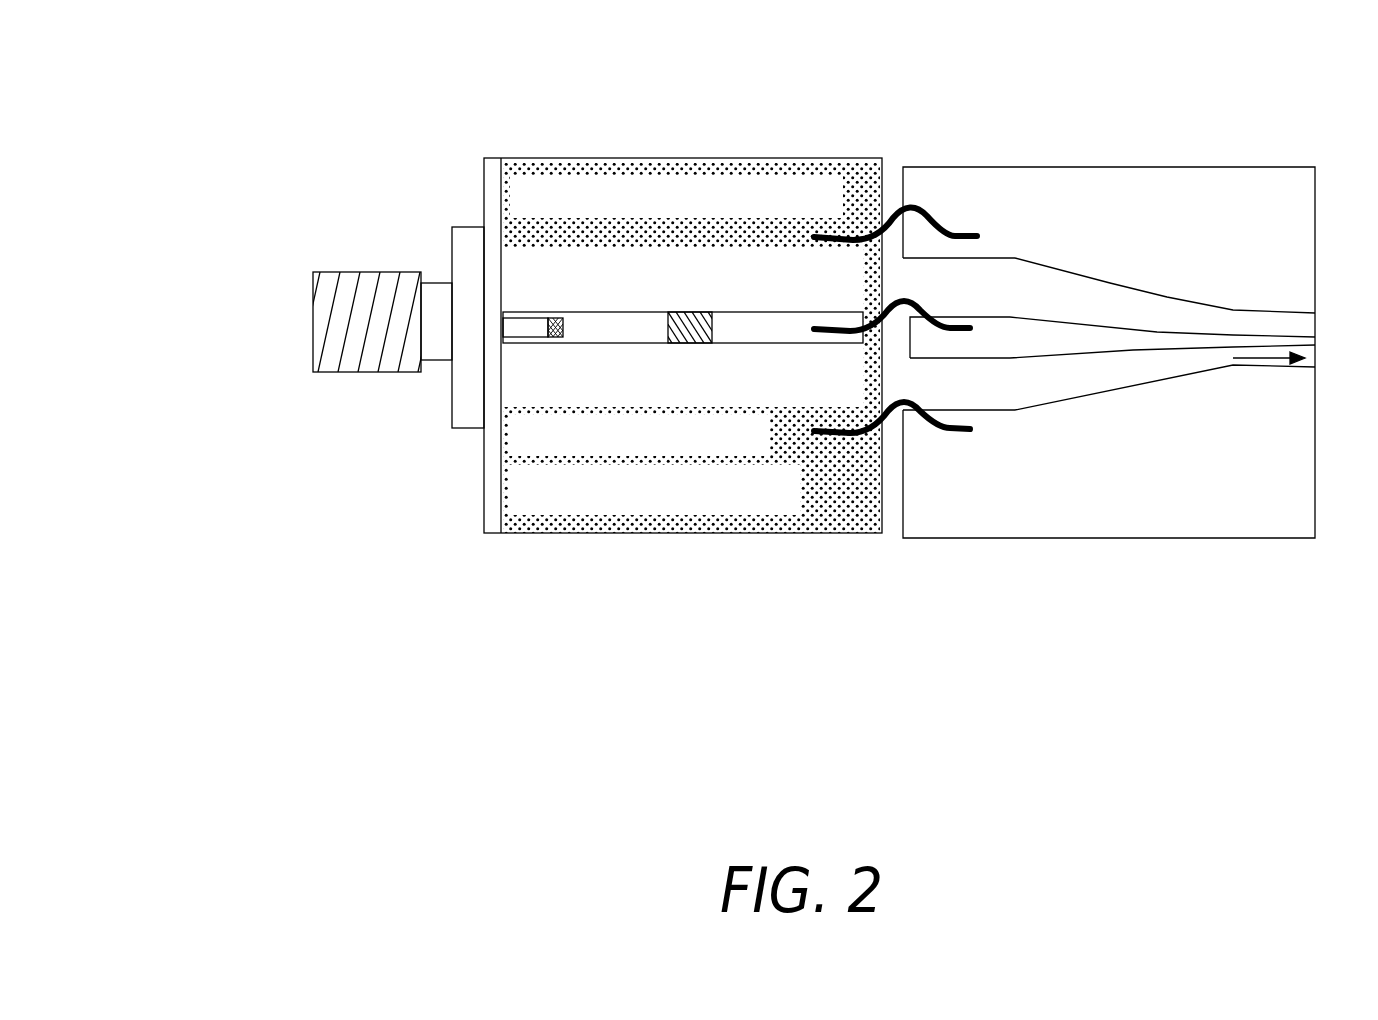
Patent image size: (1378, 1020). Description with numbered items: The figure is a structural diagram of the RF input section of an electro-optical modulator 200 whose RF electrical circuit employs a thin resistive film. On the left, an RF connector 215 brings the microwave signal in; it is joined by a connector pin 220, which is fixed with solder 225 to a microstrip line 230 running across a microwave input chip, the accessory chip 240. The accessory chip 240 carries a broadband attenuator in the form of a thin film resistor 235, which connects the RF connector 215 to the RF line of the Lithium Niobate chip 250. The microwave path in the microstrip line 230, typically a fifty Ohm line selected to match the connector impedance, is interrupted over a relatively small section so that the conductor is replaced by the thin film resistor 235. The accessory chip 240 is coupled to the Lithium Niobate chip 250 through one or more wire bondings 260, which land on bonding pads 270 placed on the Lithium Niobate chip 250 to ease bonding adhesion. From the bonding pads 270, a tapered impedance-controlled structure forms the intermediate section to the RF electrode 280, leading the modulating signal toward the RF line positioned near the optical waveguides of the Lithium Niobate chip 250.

The electro-optical modulator 200 is at (394, 787).
The RF connector 215 is at (302, 295).
The connector pin 220 is at (523, 327).
The solder 225 is at (547, 343).
The microstrip line 230 is at (825, 473).
The thin film resistor 235 is at (685, 312).
The accessory chip 240 is at (613, 383).
The Lithium Niobate chip 250 is at (1063, 167).
The wire bondings 260 is at (943, 242).
The bonding pads 270 is at (1000, 342).
The intermediate section to the RF electrode 280 is at (1130, 345).